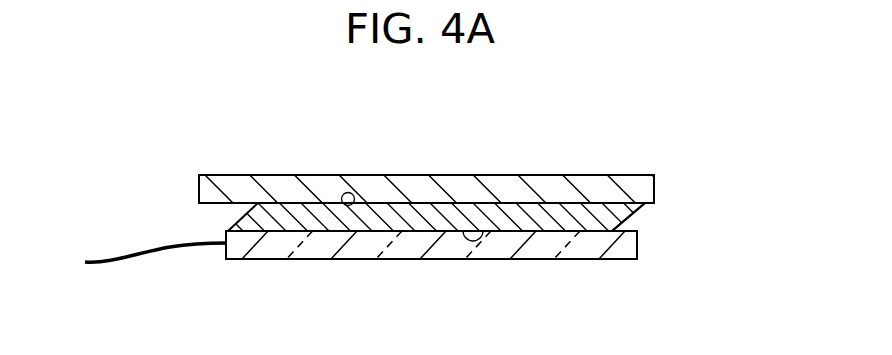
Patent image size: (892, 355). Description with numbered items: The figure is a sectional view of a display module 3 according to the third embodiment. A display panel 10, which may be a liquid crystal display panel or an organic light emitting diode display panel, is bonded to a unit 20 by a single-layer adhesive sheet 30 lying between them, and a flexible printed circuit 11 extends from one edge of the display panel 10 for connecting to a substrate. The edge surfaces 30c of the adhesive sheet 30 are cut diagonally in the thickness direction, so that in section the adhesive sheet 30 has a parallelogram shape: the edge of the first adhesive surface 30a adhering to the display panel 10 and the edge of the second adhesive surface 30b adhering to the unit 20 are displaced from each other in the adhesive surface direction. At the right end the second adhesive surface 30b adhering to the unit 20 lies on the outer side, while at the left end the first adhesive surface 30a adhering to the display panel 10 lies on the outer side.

The display module 3 is at (290, 99).
The display panel 10 is at (597, 260).
The flexible printed circuit 11 is at (147, 252).
The unit 20 is at (545, 183).
The adhesive sheet 30 is at (597, 208).
The first adhesive surface 30a is at (483, 230).
The second adhesive surface 30b is at (343, 206).
The edge surface 30c is at (630, 217).